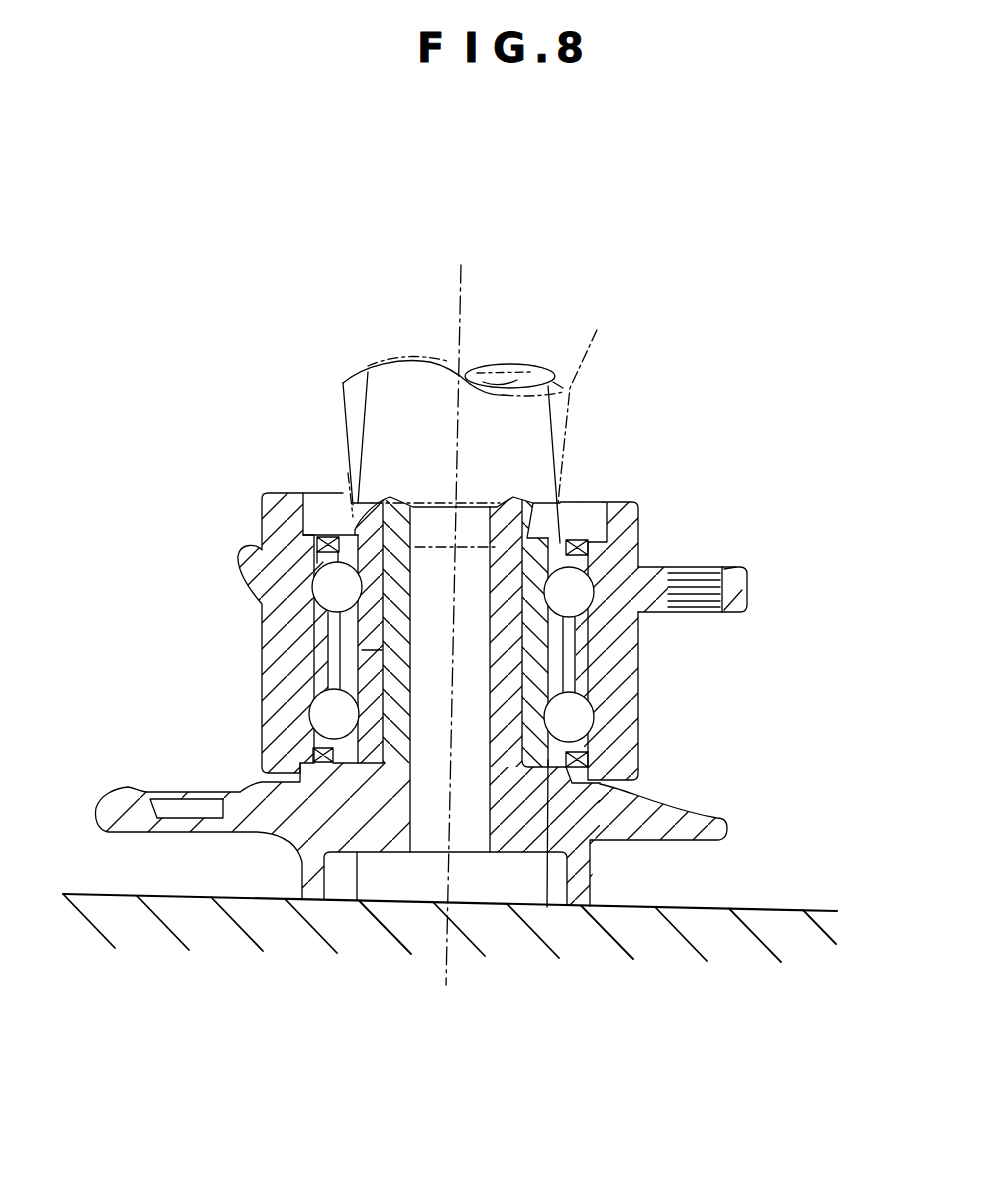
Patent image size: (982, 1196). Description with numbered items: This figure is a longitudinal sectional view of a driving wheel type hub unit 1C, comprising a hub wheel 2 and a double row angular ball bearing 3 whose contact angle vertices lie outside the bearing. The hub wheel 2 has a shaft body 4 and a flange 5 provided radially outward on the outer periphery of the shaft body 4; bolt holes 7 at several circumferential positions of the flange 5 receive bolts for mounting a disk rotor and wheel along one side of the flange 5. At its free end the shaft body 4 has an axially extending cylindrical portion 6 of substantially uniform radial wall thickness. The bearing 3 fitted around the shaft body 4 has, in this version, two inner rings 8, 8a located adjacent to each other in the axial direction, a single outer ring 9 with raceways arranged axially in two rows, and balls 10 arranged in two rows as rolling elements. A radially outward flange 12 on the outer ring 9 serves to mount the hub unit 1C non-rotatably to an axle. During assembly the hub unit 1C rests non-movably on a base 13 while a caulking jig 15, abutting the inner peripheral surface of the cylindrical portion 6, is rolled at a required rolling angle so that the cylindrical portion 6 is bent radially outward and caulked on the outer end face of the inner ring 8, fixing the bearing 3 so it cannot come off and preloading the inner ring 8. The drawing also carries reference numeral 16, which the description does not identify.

The hub unit 1C is at (764, 300).
The hub wheel 2 is at (358, 900).
The double row angular ball bearing 3 is at (273, 703).
The shaft body 4 is at (507, 638).
The flange 5 is at (725, 818).
The cylindrical portion 6 is at (378, 522).
The bolt holes 7 is at (187, 823).
The inner ring 8 is at (558, 550).
The inner ring 8a is at (547, 907).
The outer ring 9 is at (633, 650).
The balls 10 is at (330, 714).
The flange 12 is at (740, 567).
The base 13 is at (760, 911).
The caulking jig 15 is at (537, 362).
The axis 16 is at (462, 312).